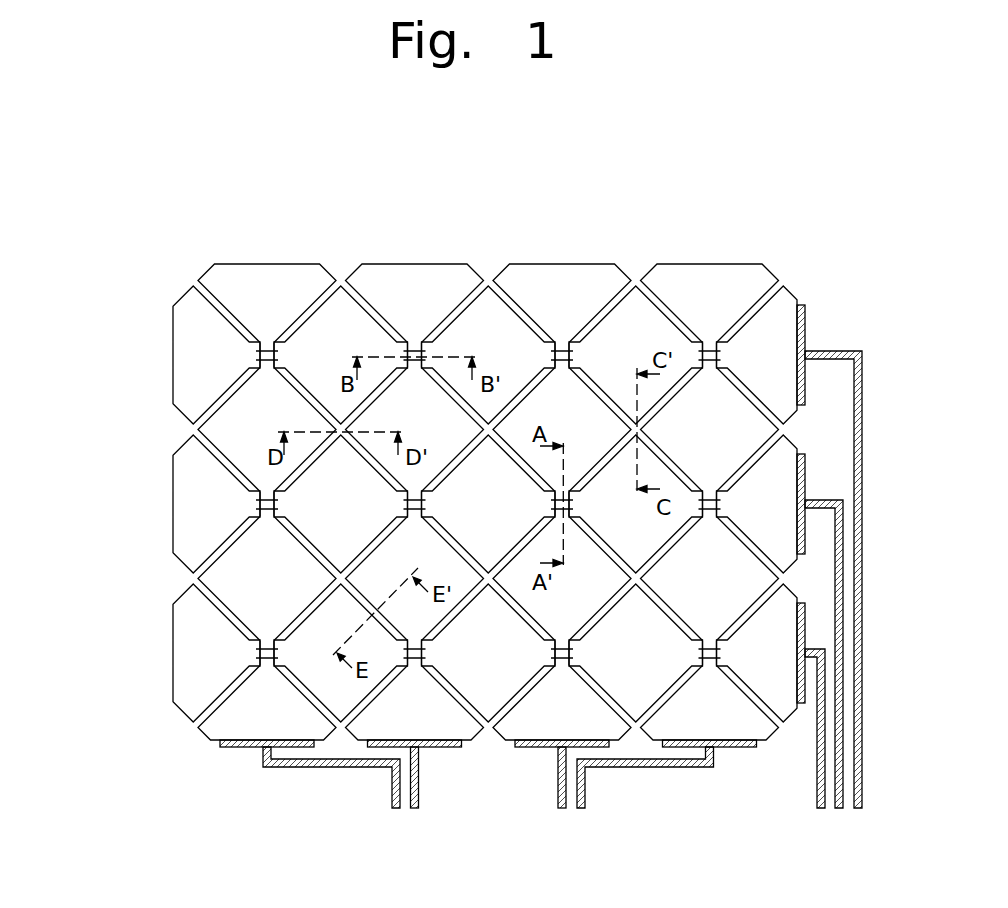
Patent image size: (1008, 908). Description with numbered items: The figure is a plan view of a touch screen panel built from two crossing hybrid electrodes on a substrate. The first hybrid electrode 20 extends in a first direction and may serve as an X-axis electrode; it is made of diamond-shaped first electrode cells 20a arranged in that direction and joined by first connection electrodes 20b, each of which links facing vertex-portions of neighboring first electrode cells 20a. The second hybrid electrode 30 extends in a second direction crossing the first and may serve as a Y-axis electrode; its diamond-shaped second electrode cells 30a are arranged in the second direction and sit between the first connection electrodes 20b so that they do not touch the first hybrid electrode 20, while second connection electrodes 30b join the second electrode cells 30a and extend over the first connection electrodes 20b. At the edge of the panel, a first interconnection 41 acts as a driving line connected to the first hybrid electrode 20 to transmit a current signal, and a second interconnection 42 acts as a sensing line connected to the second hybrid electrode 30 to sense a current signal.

The first hybrid electrode 20 is at (488, 447).
The first electrode cells 20a is at (628, 308).
The first connection electrodes 20b is at (573, 345).
The second hybrid electrode 30 is at (422, 504).
The second electrode cells 30a is at (247, 303).
The second connection electrodes 30b is at (260, 357).
The first interconnection 41 is at (818, 793).
The second interconnection 42 is at (585, 792).